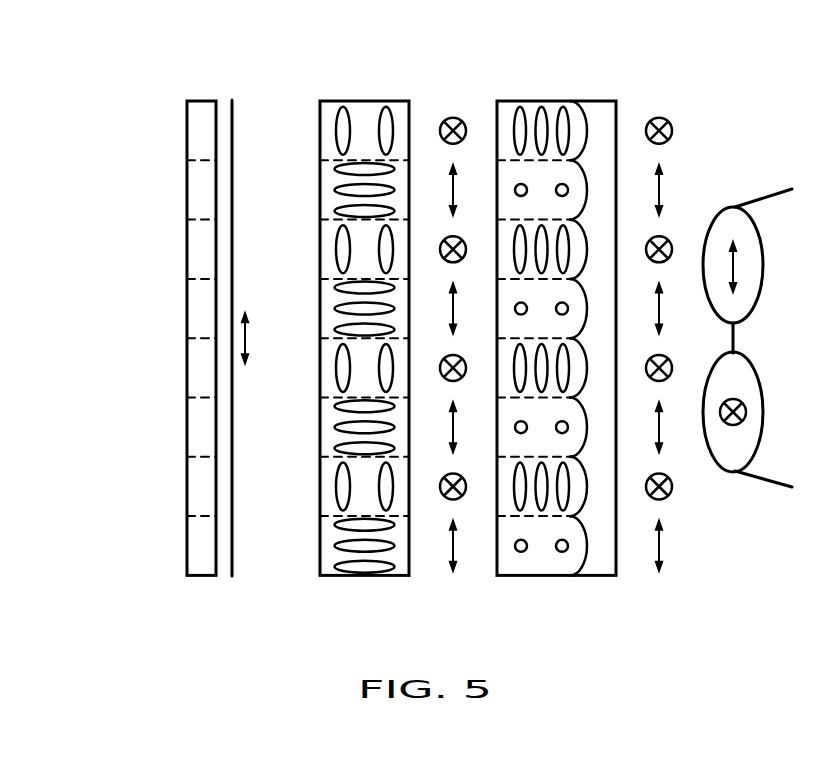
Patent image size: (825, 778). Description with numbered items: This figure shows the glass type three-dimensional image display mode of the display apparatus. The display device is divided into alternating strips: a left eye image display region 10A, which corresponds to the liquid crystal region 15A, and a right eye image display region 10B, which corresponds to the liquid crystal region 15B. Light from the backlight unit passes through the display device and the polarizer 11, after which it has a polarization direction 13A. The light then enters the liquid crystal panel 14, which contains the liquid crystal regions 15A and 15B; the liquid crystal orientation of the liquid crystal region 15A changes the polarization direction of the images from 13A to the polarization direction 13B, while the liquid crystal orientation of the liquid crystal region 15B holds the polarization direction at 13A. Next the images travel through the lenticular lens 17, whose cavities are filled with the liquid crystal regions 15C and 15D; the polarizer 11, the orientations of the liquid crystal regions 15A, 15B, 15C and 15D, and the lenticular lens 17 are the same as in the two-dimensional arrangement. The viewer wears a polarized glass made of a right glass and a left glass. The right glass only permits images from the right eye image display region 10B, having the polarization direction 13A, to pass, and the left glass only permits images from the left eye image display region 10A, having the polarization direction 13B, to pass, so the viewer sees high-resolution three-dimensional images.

The left eye image display region 10A is at (187, 133).
The right eye image display region 10B is at (187, 192).
The polarizer 11 is at (232, 128).
The polarization direction 13A is at (247, 337).
The polarization direction 13B is at (453, 117).
The liquid crystal panel 14 is at (410, 96).
The liquid crystal region 15A is at (320, 490).
The liquid crystal region 15B is at (320, 550).
The liquid crystal region 15C is at (585, 245).
The liquid crystal region 15D is at (587, 407).
The lenticular lens 17 is at (617, 120).